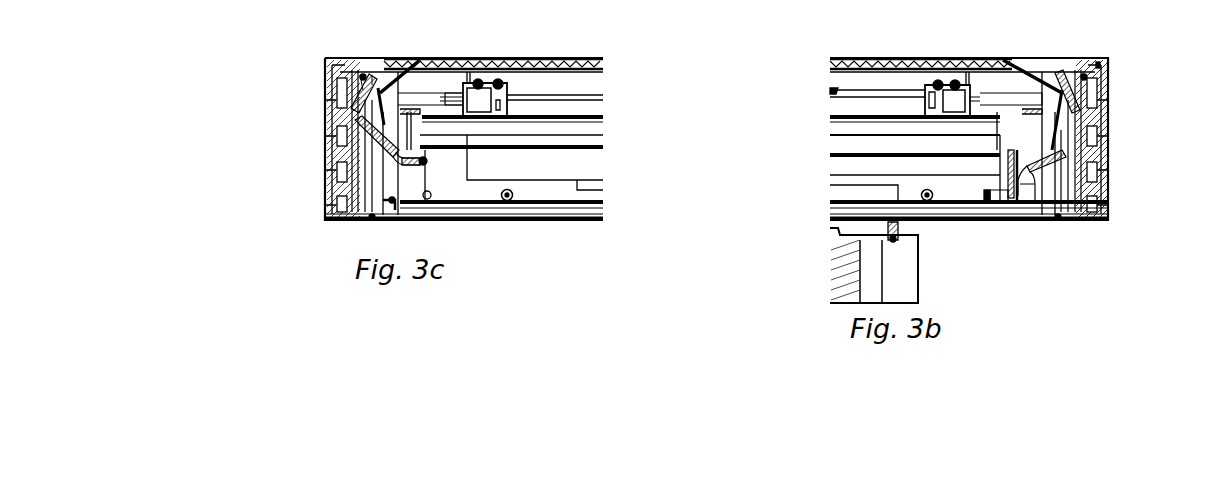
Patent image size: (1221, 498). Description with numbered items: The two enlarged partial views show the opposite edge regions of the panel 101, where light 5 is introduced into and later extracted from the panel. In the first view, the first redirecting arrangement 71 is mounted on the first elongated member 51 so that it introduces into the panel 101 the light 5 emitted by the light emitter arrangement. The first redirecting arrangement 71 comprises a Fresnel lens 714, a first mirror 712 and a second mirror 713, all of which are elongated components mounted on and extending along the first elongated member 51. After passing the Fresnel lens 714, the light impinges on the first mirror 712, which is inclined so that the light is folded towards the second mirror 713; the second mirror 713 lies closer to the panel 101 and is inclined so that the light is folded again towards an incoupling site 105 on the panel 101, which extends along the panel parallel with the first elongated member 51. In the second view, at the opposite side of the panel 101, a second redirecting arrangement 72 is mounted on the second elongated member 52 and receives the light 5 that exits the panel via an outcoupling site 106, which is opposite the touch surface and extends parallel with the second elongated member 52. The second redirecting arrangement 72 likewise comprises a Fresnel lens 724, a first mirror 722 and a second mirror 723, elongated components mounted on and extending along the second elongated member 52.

In FIG. 3C, the light 5 is at (590, 133).
In FIG. 3B, the light 5 is at (832, 140).
In FIG. 3B, the first elongated member 51 is at (1088, 222).
In FIG. 3C, the second elongated member 52 is at (346, 212).
In FIG. 3B, the first redirecting arrangement 71 is at (1135, 150).
In FIG. 3C, the second redirecting arrangement 72 is at (300, 133).
In FIG. 3C, the panel 101 is at (470, 57).
In FIG. 3B, the panel 101 is at (1110, 60).
In FIG. 3B, the incoupling site 105 is at (1041, 52).
In FIG. 3C, the outcoupling site 106 is at (422, 50).
In FIG. 3B, the first mirror 712 is at (1030, 206).
In FIG. 3B, the second mirror 713 is at (1110, 88).
In FIG. 3B, the Fresnel lens 714 is at (1000, 210).
In FIG. 3C, the first mirror 722 is at (344, 88).
In FIG. 3C, the second mirror 723 is at (326, 172).
In FIG. 3C, the Fresnel lens 724 is at (455, 160).